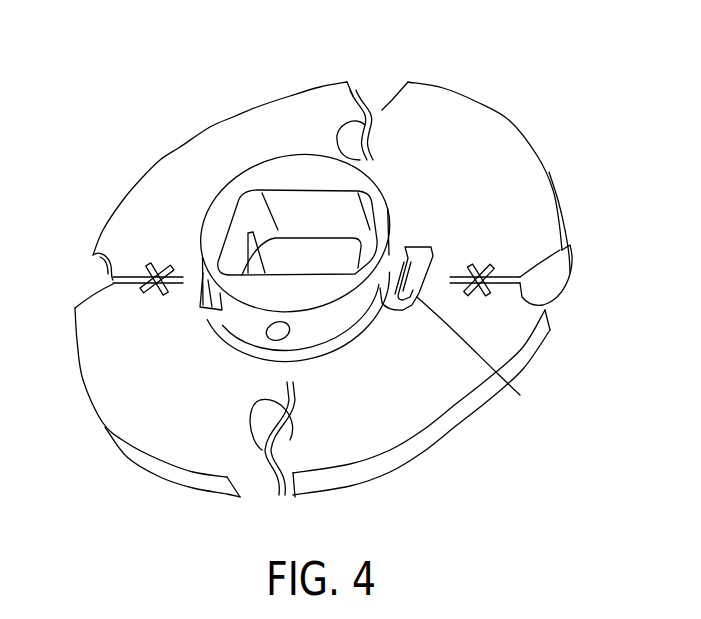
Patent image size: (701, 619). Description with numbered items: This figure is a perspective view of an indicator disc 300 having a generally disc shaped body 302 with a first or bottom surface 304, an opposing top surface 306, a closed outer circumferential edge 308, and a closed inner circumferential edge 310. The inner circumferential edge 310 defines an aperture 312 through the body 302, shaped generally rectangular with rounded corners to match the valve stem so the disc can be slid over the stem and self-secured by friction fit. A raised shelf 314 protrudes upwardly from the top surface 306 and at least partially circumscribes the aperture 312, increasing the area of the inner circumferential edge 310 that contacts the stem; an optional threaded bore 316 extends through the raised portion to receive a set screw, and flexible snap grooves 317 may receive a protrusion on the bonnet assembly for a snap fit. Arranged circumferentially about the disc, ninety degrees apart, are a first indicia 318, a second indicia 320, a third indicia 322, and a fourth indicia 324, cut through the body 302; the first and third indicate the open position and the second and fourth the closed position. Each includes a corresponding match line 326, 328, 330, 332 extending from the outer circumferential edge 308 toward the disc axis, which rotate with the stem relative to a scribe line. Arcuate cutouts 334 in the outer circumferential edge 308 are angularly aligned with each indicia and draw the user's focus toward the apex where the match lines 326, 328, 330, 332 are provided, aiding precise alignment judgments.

The indicator disc 300 is at (606, 112).
The disc shaped body 302 is at (176, 170).
The bottom surface 304 is at (476, 455).
The top surface 306 is at (483, 116).
The outer circumferential edge 308 is at (105, 425).
The inner circumferential edge 310 is at (288, 240).
The aperture 312 is at (303, 262).
The raised shelf 314 is at (362, 312).
The threaded bore 316 is at (272, 336).
The flexible snap grooves 317 is at (520, 395).
The first indicia 318 is at (300, 425).
The second indicia 320 is at (566, 236).
The third indicia 322 is at (343, 128).
The fourth indicia 324 is at (78, 318).
The match line 326 is at (262, 447).
The match line 328 is at (457, 266).
The match line 330 is at (380, 100).
The match line 332 is at (173, 290).
The cutouts 334 is at (352, 86).